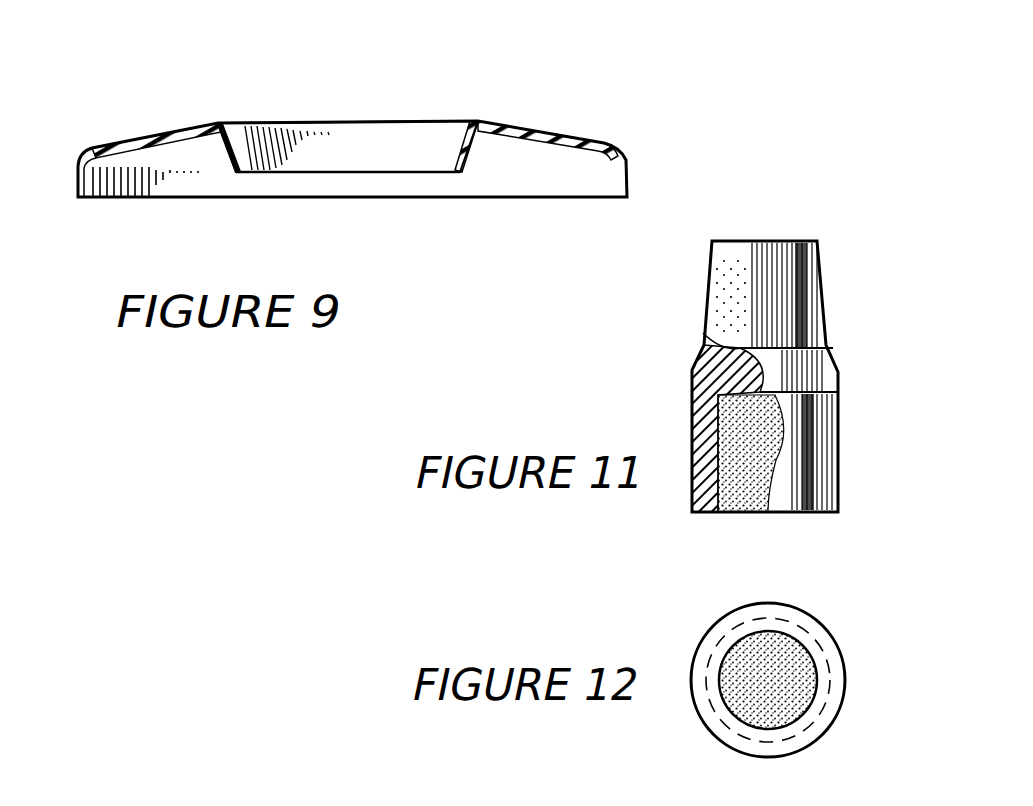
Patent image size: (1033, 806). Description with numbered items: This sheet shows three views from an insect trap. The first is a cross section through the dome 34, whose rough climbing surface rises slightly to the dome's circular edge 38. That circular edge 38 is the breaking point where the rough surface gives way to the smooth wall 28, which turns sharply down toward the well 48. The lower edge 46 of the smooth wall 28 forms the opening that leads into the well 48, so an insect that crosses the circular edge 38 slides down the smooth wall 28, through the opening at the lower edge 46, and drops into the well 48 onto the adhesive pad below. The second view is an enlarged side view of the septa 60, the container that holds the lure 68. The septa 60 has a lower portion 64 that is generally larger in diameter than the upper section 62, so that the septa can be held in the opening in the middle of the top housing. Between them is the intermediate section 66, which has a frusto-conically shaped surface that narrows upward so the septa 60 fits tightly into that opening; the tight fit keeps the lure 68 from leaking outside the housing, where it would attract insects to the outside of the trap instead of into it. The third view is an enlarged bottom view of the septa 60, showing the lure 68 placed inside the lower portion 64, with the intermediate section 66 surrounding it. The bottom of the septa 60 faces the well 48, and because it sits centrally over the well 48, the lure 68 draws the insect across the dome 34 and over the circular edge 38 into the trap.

In FIG. 9, the smooth wall 28 is at (432, 150).
In FIG. 9, the dome 34 is at (601, 125).
In FIG. 9, the circular edge 38 is at (225, 110).
In FIG. 9, the lower edge 46 is at (446, 200).
In FIG. 9, the well 48 is at (266, 181).
In FIG. 11, the septa 60 is at (686, 286).
In FIG. 12, the septa 60 is at (841, 619).
In FIG. 11, the upper section 62 is at (684, 405).
In FIG. 11, the lower portion 64 is at (823, 250).
In FIG. 12, the lower portion 64 is at (698, 716).
In FIG. 11, the intermediate section 66 is at (843, 352).
In FIG. 12, the intermediate section 66 is at (768, 622).
In FIG. 11, the lure 68 is at (752, 494).
In FIG. 12, the lure 68 is at (746, 680).